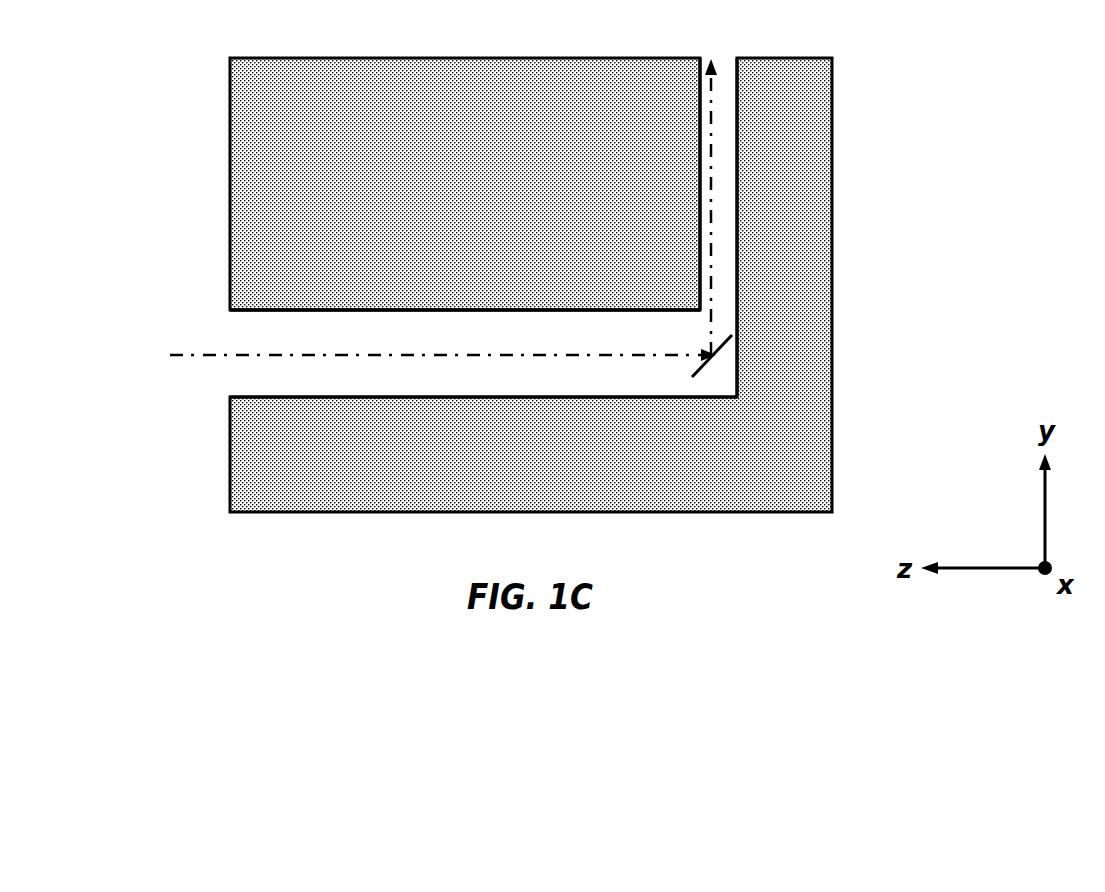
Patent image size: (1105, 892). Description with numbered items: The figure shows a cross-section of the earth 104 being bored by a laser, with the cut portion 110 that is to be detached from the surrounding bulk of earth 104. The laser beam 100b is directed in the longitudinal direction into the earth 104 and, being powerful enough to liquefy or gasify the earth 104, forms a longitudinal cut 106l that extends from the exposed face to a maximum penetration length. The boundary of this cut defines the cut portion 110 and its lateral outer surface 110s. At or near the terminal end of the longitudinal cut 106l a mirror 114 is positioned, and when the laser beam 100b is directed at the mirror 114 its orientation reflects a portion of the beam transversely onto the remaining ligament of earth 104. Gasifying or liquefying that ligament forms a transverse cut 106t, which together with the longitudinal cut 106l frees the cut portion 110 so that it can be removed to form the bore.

The earth 104 is at (816, 500).
The cut portion 110 is at (498, 198).
The lateral outer surface 110s is at (377, 310).
The longitudinal cut 106l is at (250, 335).
The transverse cut 106t is at (737, 164).
The laser beam 100b is at (178, 357).
The mirror 114 is at (728, 348).